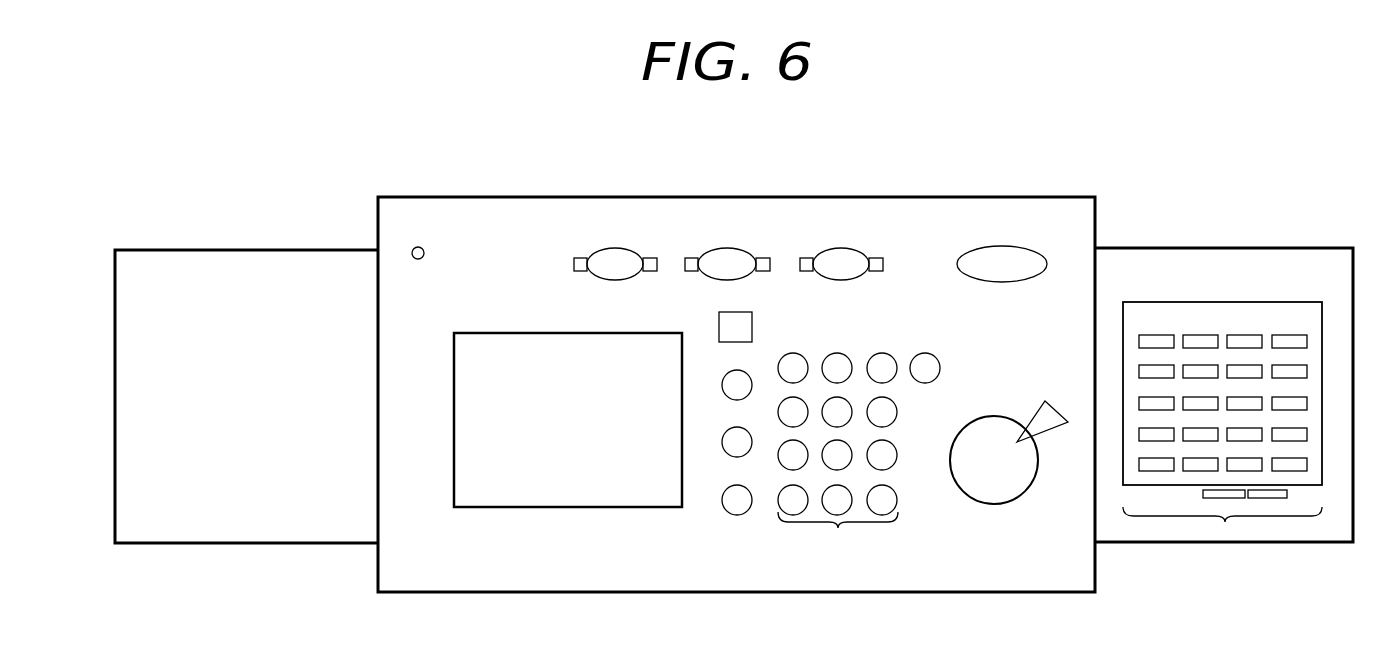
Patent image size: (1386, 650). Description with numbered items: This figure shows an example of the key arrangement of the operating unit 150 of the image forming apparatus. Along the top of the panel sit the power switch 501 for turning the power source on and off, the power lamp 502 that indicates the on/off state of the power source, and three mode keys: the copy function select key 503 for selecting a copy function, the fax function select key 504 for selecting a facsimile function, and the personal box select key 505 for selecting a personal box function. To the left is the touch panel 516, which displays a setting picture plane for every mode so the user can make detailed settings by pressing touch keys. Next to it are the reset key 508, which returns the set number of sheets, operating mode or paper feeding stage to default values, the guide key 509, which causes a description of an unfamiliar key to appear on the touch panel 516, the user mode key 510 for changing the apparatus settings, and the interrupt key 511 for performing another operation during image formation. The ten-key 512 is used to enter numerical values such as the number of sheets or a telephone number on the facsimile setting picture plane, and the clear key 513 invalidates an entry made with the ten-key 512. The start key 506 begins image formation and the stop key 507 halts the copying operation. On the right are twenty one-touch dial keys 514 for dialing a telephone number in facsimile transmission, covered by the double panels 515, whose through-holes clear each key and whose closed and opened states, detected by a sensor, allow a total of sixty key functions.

The operating unit 150 is at (1056, 200).
The power switch 501 is at (1000, 247).
The power lamp 502 is at (418, 247).
The copy function select key 503 is at (615, 248).
The fax function select key 504 is at (727, 248).
The personal box select key 505 is at (840, 248).
The start key 506 is at (987, 495).
The stop key 507 is at (1053, 427).
The reset key 508 is at (719, 329).
The guide key 509 is at (722, 386).
The user mode key 510 is at (722, 442).
The interrupt key 511 is at (722, 500).
The ten-key 512 is at (838, 528).
The clear key 513 is at (925, 383).
The one-touch dial keys 514 is at (1225, 522).
The double panels 515 is at (1300, 255).
The touch panel 516 is at (508, 333).